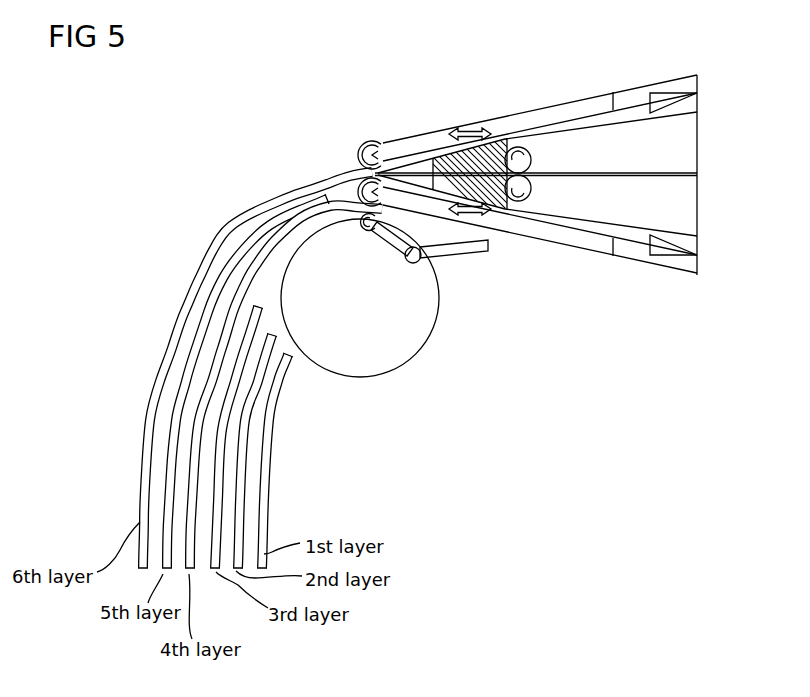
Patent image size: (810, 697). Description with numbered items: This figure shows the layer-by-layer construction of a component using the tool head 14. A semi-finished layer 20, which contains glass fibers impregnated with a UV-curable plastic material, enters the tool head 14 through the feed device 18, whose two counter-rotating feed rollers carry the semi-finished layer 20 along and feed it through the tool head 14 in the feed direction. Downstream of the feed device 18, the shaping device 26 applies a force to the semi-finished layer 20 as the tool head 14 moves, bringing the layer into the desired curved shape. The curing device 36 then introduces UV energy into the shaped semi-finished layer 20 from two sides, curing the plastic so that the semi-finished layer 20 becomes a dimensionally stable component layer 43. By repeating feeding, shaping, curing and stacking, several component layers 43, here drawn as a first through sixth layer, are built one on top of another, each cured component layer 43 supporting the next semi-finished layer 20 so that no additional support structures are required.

The tool head 14 is at (593, 76).
The curing device 36 is at (713, 90).
The semi-finished layer 20 is at (672, 174).
The feed device 18 is at (548, 190).
The shaping device 26 is at (389, 126).
The component layer 43 is at (298, 372).